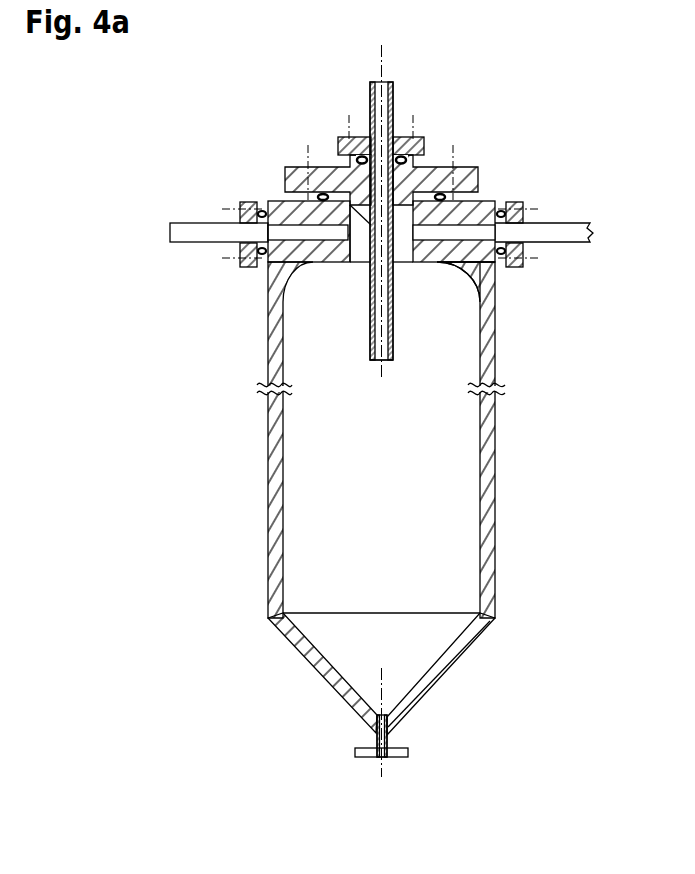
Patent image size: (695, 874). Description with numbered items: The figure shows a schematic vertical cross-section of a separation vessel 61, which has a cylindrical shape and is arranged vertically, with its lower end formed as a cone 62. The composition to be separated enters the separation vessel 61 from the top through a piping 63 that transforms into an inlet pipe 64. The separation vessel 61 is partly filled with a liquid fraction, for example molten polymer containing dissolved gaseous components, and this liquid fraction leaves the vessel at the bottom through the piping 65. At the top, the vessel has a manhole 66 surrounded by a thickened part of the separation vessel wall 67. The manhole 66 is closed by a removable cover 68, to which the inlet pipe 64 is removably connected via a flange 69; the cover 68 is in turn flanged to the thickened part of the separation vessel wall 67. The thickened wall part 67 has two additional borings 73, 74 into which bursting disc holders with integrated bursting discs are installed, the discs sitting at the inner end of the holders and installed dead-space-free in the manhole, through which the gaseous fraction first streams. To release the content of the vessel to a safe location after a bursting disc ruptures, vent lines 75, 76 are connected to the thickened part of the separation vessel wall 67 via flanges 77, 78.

The separation vessel 61 is at (485, 498).
The cone 62 is at (437, 667).
The piping 63 is at (383, 98).
The inlet pipe 64 is at (397, 340).
The piping 65 is at (388, 742).
The manhole 66 is at (360, 252).
The thickened part of the separation vessel wall 67 is at (437, 252).
The removable cover 68 is at (425, 167).
The flange 69 is at (340, 147).
The boring 73 is at (278, 201).
The boring 74 is at (481, 202).
The vent line 75 is at (200, 236).
The vent line 76 is at (562, 235).
The flange 77 is at (248, 202).
The flange 78 is at (515, 202).